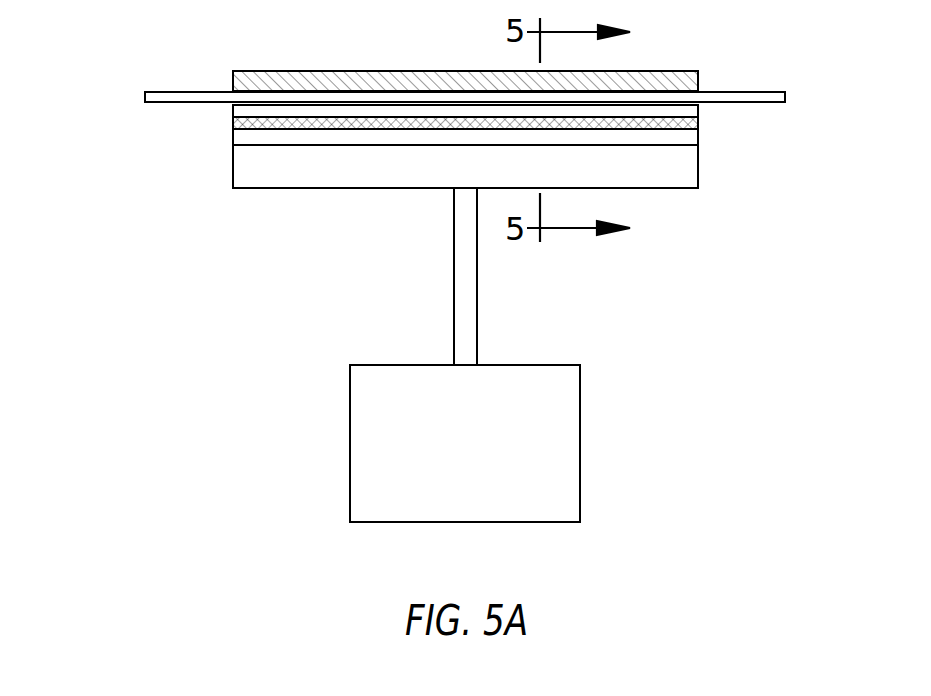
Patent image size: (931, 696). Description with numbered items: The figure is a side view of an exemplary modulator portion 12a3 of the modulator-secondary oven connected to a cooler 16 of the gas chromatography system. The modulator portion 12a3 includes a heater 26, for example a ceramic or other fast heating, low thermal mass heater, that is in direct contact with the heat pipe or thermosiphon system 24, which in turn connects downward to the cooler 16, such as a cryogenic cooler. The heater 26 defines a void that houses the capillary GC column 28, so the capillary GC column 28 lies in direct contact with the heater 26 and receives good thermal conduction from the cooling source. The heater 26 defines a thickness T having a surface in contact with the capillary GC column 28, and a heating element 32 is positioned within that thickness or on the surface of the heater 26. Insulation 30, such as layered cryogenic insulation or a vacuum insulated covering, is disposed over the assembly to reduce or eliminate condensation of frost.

The modulator portion 12a3 is at (223, 75).
The cooler 16 is at (372, 365).
The heat pipe or thermosiphon system 24 is at (232, 165).
The heater 26 is at (700, 105).
The capillary GC column 28 is at (785, 97).
The insulation 30 is at (300, 70).
The heating element 32 is at (232, 121).